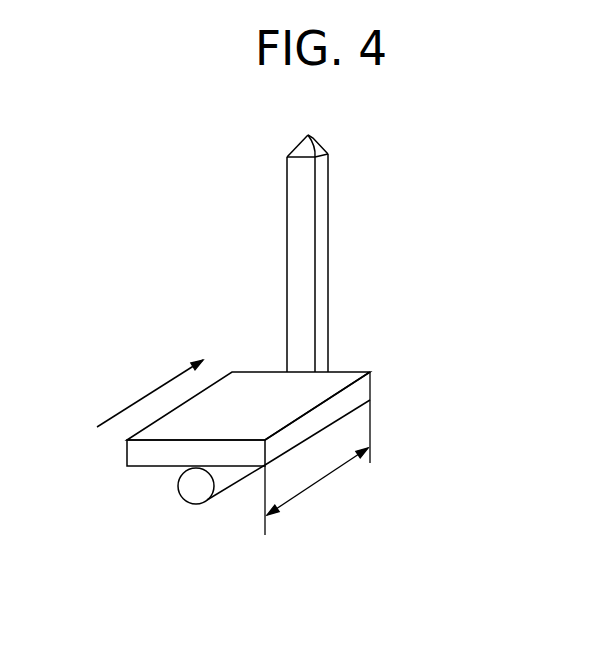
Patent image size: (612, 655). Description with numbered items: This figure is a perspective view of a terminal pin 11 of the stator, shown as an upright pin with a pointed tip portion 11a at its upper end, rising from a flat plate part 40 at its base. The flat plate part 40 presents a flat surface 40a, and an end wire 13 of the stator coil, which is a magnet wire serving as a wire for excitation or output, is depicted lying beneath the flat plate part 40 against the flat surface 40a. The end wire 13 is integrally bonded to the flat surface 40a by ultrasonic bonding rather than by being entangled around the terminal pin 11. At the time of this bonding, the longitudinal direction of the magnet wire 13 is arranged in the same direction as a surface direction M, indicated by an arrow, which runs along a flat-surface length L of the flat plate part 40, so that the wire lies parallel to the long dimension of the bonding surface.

The terminal pin 11 is at (360, 297).
The tip portion of terminal pin 11a is at (328, 187).
The flat plate part 40 is at (312, 398).
The flat surface 40a is at (307, 442).
The end wire 13 is at (197, 505).
The surface direction M is at (132, 407).
The flat-surface length L is at (333, 477).